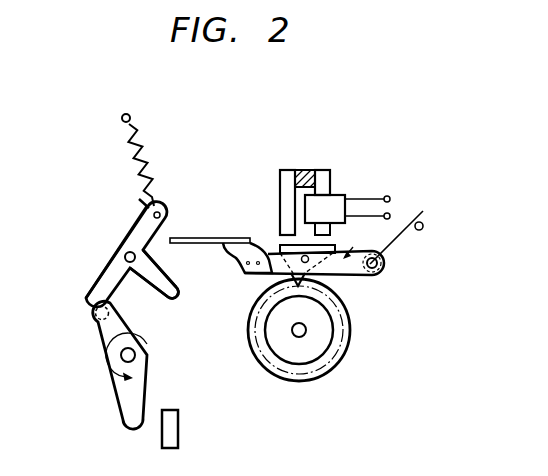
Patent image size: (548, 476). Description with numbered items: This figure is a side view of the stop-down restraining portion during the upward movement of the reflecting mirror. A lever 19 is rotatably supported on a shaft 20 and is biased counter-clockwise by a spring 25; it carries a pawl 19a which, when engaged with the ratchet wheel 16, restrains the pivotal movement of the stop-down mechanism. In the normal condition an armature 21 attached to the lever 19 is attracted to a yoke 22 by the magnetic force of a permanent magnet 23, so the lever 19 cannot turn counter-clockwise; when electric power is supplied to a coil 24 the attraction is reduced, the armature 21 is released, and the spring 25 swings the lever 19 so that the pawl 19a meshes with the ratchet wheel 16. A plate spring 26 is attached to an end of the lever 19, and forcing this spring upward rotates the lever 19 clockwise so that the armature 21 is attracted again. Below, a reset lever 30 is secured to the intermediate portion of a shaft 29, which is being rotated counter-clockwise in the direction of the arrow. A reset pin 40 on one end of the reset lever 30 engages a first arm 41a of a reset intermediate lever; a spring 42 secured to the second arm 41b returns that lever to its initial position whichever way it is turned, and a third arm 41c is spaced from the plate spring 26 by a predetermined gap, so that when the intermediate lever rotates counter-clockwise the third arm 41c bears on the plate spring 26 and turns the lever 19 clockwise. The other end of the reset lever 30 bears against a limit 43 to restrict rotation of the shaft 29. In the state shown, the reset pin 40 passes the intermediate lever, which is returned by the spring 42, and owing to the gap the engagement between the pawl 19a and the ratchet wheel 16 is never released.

The ratchet wheel 16 is at (322, 342).
The lever 19 is at (355, 275).
The pawl 19a is at (302, 282).
The shaft 20 is at (386, 268).
The armature 21 is at (285, 250).
The yoke 22 is at (287, 171).
The permanent magnet 23 is at (305, 170).
The coil 24 is at (335, 201).
The spring 25 is at (423, 232).
The plate spring 26 is at (240, 250).
The shaft 29 is at (135, 357).
The reset lever 30 is at (122, 401).
The reset pin 40 is at (99, 319).
The first arm 41a is at (93, 296).
The second arm 41b is at (166, 209).
The third arm 41c is at (173, 293).
The spring 42 is at (146, 150).
The limit 43 is at (172, 425).